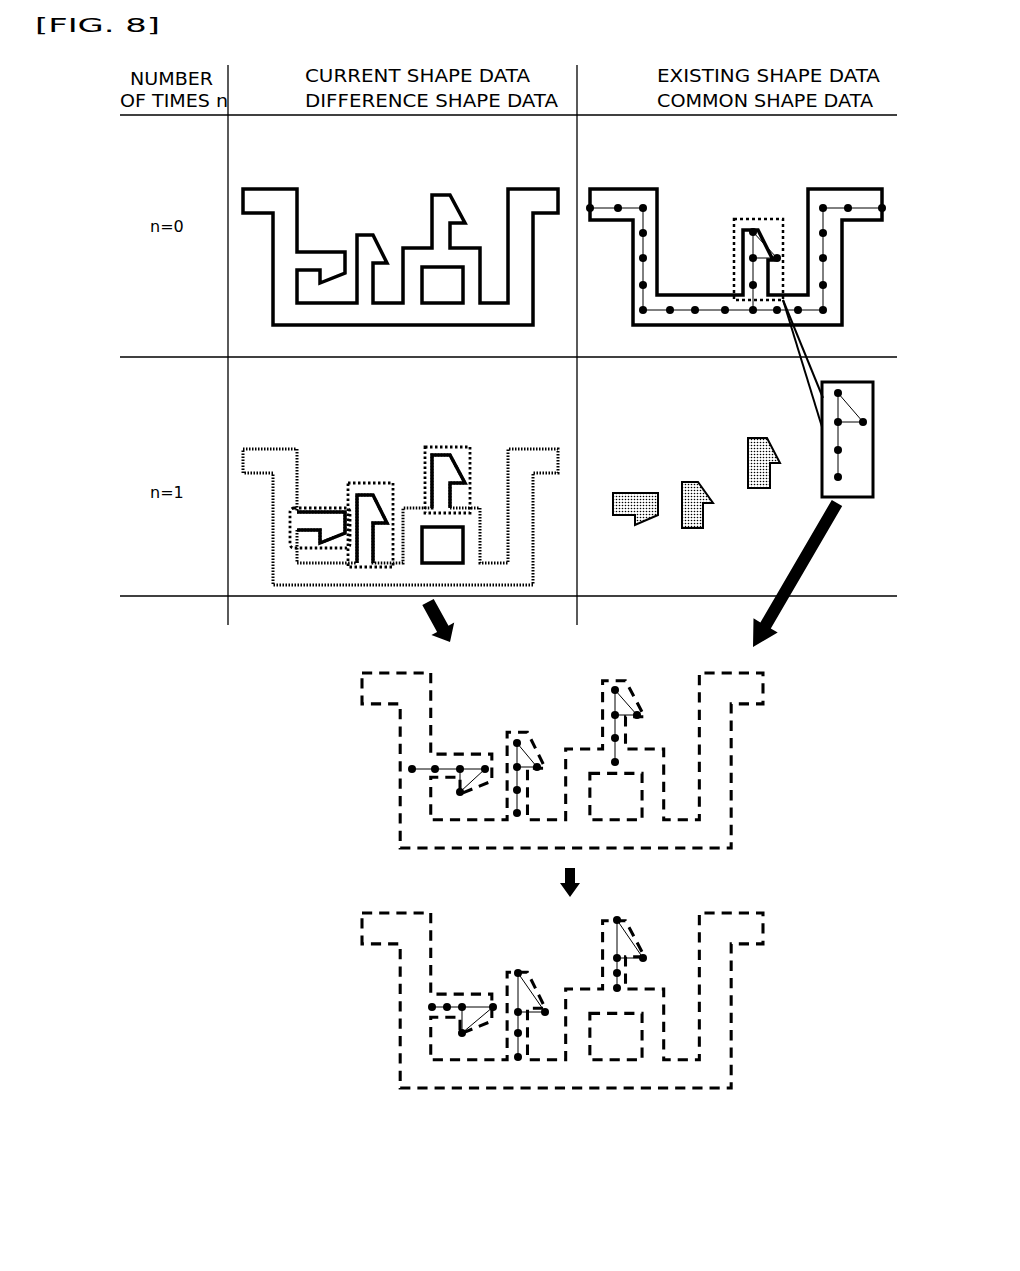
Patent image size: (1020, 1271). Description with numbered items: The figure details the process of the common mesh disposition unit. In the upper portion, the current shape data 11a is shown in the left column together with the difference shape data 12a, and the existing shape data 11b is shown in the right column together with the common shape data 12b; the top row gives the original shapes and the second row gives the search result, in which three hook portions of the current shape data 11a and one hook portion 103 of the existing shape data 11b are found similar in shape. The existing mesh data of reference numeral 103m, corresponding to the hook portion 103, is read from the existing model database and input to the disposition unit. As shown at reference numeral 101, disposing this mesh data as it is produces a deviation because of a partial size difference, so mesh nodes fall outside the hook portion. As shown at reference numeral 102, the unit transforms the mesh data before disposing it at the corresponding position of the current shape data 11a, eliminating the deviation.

The current shape data 11a is at (400, 195).
The difference shape data 12a is at (400, 338).
The existing shape data 11b is at (736, 195).
The common shape data 12b is at (691, 309).
The hook portion 103 is at (747, 219).
The existing mesh data of the hook portion 103m is at (850, 497).
The disposition with deviation 101 is at (786, 665).
The disposition after transformation 102 is at (786, 895).